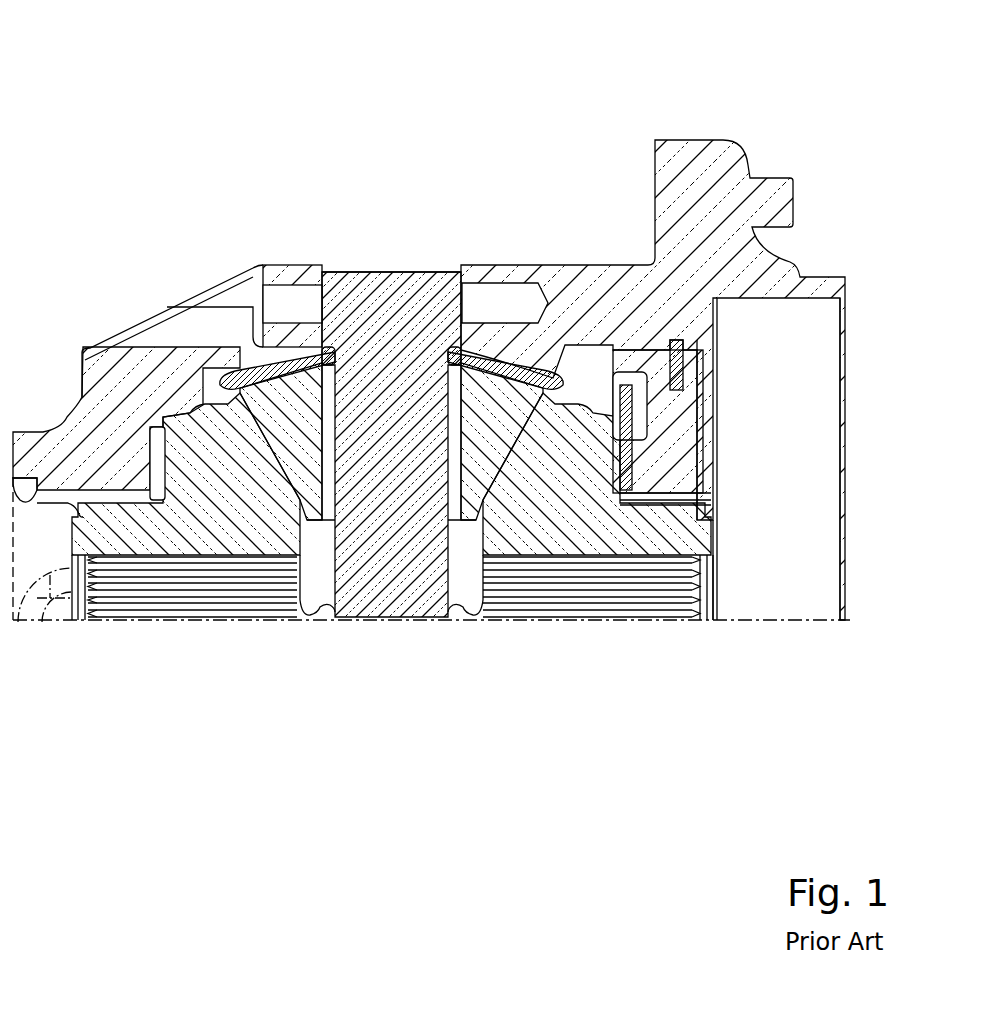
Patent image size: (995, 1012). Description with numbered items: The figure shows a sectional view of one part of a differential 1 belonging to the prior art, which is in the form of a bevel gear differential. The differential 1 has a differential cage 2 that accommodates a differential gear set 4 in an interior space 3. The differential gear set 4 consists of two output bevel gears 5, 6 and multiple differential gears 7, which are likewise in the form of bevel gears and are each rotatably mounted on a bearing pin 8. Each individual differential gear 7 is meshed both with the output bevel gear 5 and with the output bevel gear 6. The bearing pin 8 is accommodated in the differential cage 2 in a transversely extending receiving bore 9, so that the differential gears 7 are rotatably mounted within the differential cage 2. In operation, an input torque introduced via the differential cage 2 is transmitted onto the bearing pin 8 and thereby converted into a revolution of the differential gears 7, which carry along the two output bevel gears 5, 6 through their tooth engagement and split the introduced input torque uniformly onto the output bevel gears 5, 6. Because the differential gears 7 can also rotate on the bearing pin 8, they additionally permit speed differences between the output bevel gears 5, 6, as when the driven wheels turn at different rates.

The differential 1 is at (366, 138).
The differential cage 2 is at (582, 300).
The interior space 3 is at (210, 483).
The differential gear set 4 is at (311, 648).
The output bevel gear 5 is at (143, 403).
The output bevel gear 6 is at (560, 513).
The differential gear 7 is at (293, 403).
The bearing pin 8 is at (416, 300).
The receiving bore 9 is at (337, 262).